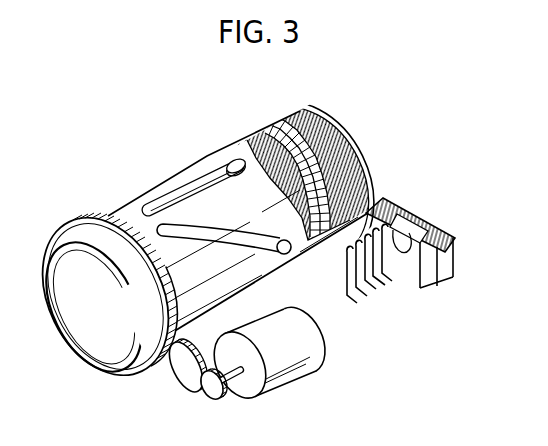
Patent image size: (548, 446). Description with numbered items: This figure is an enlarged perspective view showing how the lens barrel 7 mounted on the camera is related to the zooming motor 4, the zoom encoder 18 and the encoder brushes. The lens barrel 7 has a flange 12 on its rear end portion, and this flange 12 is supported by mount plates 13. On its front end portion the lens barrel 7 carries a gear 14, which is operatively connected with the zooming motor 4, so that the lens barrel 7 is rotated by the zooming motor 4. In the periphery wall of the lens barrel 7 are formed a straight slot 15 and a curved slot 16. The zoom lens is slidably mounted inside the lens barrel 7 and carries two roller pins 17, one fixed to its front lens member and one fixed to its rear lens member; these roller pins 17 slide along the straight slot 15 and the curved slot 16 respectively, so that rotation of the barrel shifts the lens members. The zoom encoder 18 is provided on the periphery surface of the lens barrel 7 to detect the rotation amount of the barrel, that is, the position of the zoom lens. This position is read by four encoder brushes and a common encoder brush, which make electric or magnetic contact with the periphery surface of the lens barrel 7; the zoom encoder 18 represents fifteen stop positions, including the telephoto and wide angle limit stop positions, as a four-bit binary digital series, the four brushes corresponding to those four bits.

The zooming motor 4 is at (283, 366).
The lens barrel 7 is at (238, 142).
The flange 12 is at (360, 143).
The mount plates 13 is at (410, 212).
The gear 14 is at (74, 222).
The straight slot 15 is at (196, 191).
The curved slot 16 is at (181, 219).
The roller pins 17 is at (232, 161).
The zoom encoder 18 is at (318, 133).